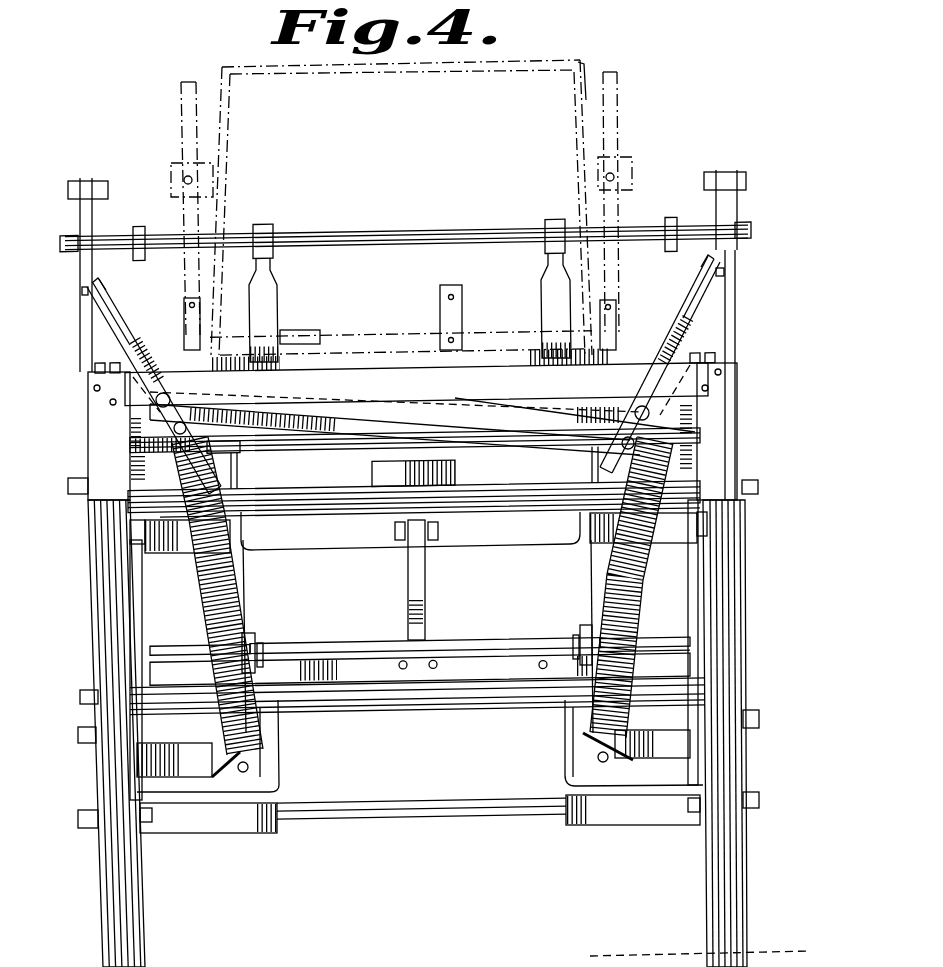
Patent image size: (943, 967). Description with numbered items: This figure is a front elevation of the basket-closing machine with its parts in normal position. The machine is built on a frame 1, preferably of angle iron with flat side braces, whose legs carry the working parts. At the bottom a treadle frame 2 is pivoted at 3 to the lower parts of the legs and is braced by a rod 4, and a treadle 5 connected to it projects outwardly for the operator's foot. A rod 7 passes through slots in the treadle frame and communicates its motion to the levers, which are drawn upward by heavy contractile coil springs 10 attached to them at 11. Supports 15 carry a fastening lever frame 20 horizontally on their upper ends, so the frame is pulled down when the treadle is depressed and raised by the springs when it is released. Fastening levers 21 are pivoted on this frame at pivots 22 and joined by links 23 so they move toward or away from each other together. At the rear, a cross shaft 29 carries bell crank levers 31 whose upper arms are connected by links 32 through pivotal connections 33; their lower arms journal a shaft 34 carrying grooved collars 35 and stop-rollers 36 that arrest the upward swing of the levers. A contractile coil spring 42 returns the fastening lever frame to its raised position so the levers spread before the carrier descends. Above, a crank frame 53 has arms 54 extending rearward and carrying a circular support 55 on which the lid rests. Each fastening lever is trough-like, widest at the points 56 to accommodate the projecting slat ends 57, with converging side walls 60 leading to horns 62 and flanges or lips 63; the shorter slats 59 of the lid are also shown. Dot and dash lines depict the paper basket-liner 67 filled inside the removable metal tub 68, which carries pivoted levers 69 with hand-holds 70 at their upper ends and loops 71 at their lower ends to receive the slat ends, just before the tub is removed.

The frame 1 is at (705, 878).
The treadle frame 2 is at (420, 578).
The pivot 3 is at (148, 820).
The rod 4 is at (410, 815).
The treadle 5 is at (372, 472).
The rod 7 is at (436, 712).
The contractile coil springs 10 is at (208, 590).
The spring attachment 11 is at (250, 760).
The supports 15 is at (242, 464).
The fastening lever frame 20 is at (555, 408).
The fastening levers 21 is at (125, 345).
The pivots 22 is at (172, 430).
The links 23 is at (515, 440).
The cross shaft 29 is at (198, 697).
The bell crank levers 31 is at (140, 605).
The links 32 is at (128, 480).
The pivotal connections 33 is at (130, 416).
The shaft 34 is at (340, 646).
The grooved collars 35 is at (222, 648).
The stop-rollers 36 is at (258, 640).
The contractile coil spring 42 is at (636, 584).
The crank frame 53 is at (438, 240).
The arms 54 is at (272, 290).
The circular support 55 is at (486, 362).
The widest points 56 is at (152, 358).
The projecting ends of fastening slat 57 is at (196, 336).
The shorter slats 59 is at (282, 334).
The side walls 60 is at (92, 322).
The horns 62 is at (94, 282).
The flanges or lips 63 is at (82, 292).
The paper basket-liner 67 is at (401, 207).
The metal tub 68 is at (578, 88).
The pivoted levers 69 is at (186, 210).
The hand-holds 70 is at (182, 120).
The loops 71 is at (411, 390).